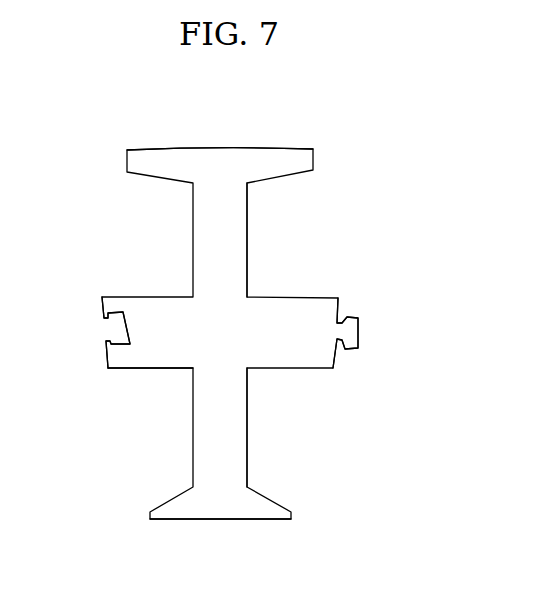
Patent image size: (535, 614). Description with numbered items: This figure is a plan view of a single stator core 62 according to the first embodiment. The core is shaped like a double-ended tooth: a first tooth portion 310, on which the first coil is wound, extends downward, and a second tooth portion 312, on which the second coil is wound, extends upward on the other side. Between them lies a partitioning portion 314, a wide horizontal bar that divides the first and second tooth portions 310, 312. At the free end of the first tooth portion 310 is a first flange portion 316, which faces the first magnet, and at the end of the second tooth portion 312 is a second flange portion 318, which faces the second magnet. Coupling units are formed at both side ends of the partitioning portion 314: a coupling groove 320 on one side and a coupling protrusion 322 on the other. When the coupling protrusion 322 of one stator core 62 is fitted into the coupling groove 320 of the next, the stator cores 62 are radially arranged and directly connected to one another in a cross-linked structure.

The stator core 62 is at (315, 139).
The first tooth portion 310 is at (241, 446).
The second tooth portion 312 is at (242, 219).
The partitioning portion 314 is at (154, 369).
The first flange portion 316 is at (224, 520).
The second flange portion 318 is at (216, 148).
The coupling groove 320 is at (118, 347).
The coupling protrusion 322 is at (358, 333).